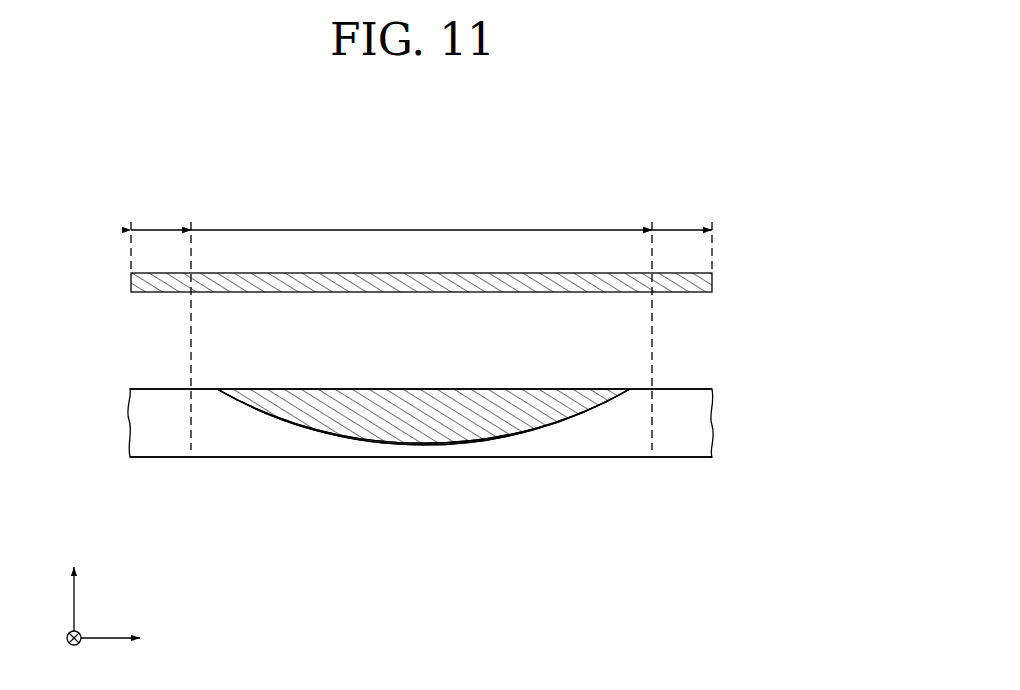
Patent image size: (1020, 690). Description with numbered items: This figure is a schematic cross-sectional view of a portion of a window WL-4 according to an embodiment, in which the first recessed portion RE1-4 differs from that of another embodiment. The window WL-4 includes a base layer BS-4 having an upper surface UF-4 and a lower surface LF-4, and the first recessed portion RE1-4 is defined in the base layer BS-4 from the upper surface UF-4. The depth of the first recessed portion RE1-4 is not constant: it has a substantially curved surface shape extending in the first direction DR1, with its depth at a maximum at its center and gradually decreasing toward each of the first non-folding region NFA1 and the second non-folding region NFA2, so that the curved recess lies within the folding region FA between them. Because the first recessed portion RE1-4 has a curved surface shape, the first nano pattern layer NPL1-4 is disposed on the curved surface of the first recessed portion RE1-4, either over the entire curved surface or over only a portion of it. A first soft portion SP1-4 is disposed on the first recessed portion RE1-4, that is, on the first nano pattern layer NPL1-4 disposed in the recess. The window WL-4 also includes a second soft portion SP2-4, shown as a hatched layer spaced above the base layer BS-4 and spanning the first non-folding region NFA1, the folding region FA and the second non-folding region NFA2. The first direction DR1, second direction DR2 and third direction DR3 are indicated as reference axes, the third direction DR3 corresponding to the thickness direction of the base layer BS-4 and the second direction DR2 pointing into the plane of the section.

The window WL-4 is at (620, 163).
The second soft portion SP2-4 is at (712, 281).
The first soft portion SP1-4 is at (430, 423).
The base layer BS-4 is at (712, 423).
The upper surface UF-4 is at (150, 387).
The lower surface LF-4 is at (150, 458).
The first recessed portion RE1-4 is at (536, 427).
The first nano pattern layer NPL1-4 is at (330, 435).
The first non-folding region NFA1 is at (161, 236).
The folding region FA is at (421, 324).
The second non-folding region NFA2 is at (682, 236).
The first direction DR1 is at (130, 637).
The second direction DR2 is at (74, 652).
The third direction DR3 is at (74, 585).